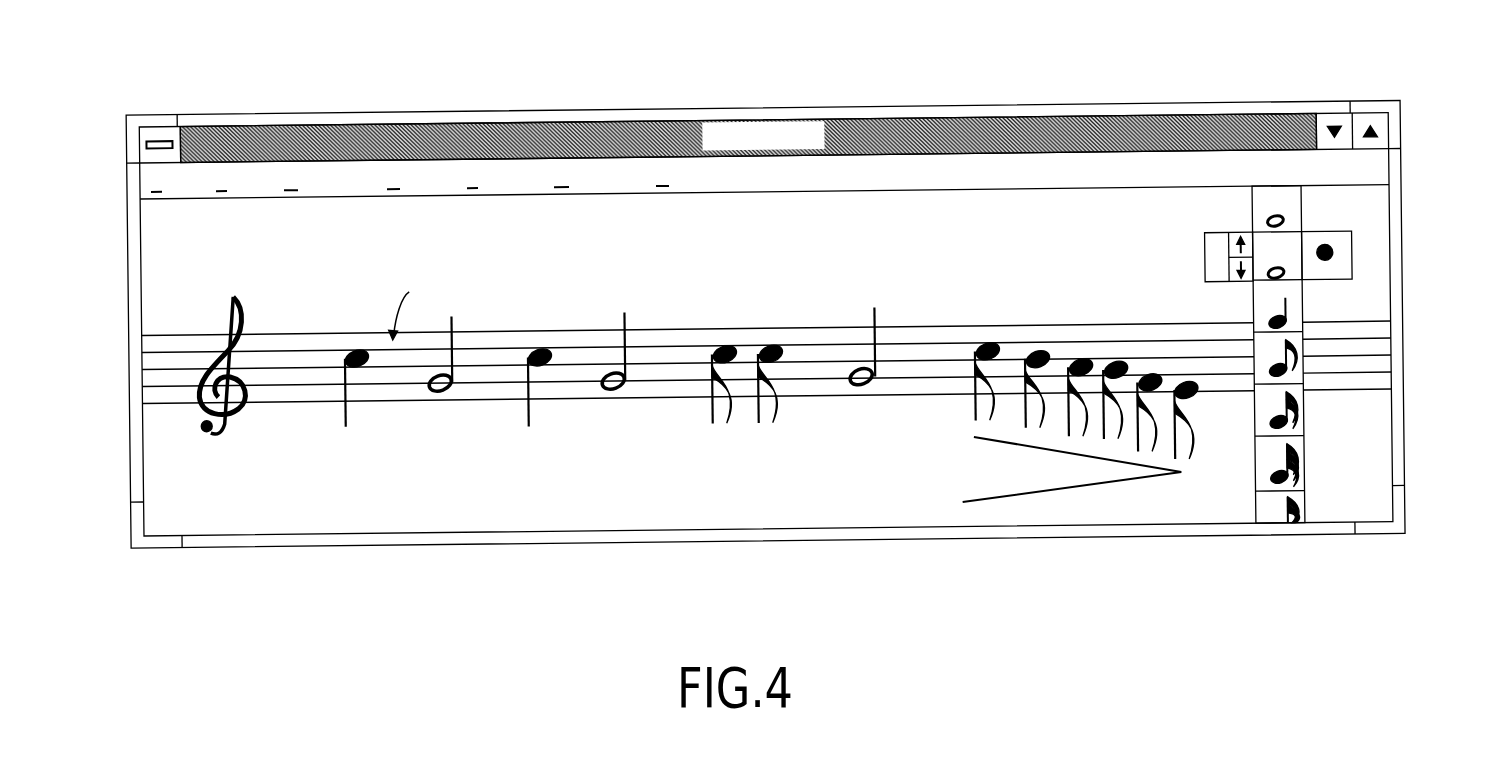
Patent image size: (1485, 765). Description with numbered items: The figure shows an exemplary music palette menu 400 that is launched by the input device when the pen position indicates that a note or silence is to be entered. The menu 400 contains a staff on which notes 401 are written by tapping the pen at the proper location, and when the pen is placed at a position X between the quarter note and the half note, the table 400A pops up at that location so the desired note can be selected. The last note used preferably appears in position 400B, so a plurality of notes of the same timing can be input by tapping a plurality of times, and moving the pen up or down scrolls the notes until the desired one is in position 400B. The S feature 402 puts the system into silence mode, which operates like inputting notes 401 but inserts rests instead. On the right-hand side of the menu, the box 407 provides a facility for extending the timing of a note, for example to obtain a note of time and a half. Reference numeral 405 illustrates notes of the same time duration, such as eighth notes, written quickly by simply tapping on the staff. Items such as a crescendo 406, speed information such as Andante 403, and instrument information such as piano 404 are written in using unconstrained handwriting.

The menu 400 is at (833, 48).
The table 400A is at (1256, 245).
The position 400B is at (1293, 256).
The notes 401 is at (988, 345).
The S 402 is at (1207, 252).
The speed information 403 is at (239, 478).
The instrument information 404 is at (738, 469).
The notes of the same time duration 405 is at (968, 432).
The crescendo 406 is at (1138, 490).
The box 407 is at (1336, 266).